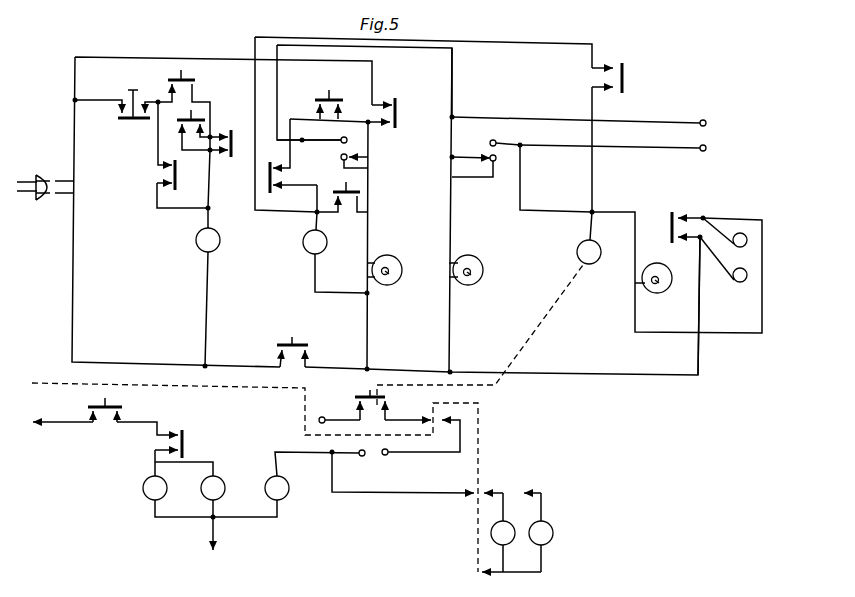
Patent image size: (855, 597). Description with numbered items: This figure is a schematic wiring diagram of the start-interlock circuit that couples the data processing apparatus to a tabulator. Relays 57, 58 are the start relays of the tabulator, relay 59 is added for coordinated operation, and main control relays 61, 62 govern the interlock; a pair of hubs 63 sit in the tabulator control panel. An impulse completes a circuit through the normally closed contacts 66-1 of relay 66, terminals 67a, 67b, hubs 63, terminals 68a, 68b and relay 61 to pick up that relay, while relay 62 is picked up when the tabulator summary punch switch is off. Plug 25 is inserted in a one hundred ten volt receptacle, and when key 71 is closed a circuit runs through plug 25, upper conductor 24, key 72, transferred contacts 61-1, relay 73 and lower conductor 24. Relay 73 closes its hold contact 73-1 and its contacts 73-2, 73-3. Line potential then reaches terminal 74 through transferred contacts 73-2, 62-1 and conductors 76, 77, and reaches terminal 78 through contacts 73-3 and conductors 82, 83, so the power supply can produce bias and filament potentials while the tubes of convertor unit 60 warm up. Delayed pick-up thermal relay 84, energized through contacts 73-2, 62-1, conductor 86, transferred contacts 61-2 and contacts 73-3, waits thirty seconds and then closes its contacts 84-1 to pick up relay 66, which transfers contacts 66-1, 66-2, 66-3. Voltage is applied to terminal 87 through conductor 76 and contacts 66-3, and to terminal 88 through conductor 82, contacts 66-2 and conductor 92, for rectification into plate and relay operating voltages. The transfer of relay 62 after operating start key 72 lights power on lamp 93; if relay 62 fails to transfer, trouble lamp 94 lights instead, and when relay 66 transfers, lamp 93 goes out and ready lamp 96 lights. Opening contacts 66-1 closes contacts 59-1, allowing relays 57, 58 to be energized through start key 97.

The conductor 24 is at (121, 58).
The plug 25 is at (45, 175).
The start key 72 is at (126, 98).
The key 71 is at (195, 80).
The transferred contacts of relay 61 61-1 is at (245, 115).
The hold contact of relay 73 73-1 is at (172, 171).
The relay 73 is at (208, 240).
The transferred contacts of relay 61 61-2 is at (266, 177).
The contacts of relay 73 73-2 is at (398, 103).
The conductor 86 is at (303, 143).
The transferred contacts of relay 62 62-1 is at (360, 157).
The delayed pick-up thermal relay 84 is at (315, 242).
The trouble lamp 94 is at (391, 282).
The power on lamp 93 is at (471, 288).
The conductor 76 is at (455, 98).
The conductor 77 is at (544, 118).
The terminal 74 is at (708, 121).
The contacts of relay 66 66-3 is at (467, 154).
The terminal 87 is at (709, 148).
The contacts of relay 84 84-1 is at (628, 78).
The relay 66 is at (589, 252).
The ready lamp 96 is at (666, 268).
The contacts of relay 66 66-2 is at (668, 220).
The conductor 92 is at (717, 218).
The terminal 88 is at (748, 238).
The conductor 83 is at (720, 260).
The terminal 78 is at (748, 277).
The conductor 82 is at (652, 377).
The contacts of relay 73 73-3 is at (288, 338).
The start key 97 is at (120, 404).
The contacts of relay 59 59-1 is at (186, 435).
The start relay 57 is at (155, 488).
The start relay 58 is at (213, 488).
The relay 59 is at (277, 488).
The hubs 63 is at (389, 466).
The normally closed contacts of relay 66 66-1 is at (368, 394).
The convertor unit 60 is at (329, 410).
The terminal 67a is at (432, 417).
The terminal 67b is at (444, 419).
The terminal 68a is at (472, 502).
The terminal 68b is at (488, 492).
The main control relay 61 is at (503, 533).
The main control relay 62 is at (541, 533).